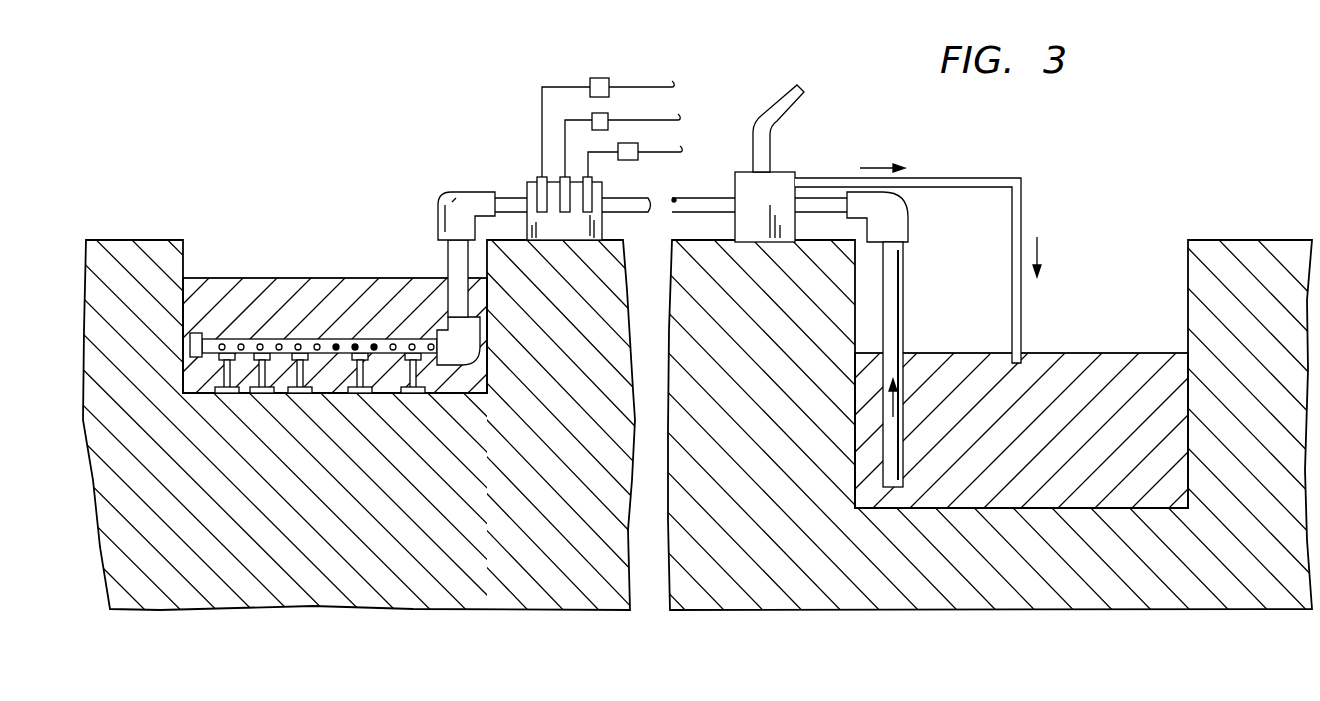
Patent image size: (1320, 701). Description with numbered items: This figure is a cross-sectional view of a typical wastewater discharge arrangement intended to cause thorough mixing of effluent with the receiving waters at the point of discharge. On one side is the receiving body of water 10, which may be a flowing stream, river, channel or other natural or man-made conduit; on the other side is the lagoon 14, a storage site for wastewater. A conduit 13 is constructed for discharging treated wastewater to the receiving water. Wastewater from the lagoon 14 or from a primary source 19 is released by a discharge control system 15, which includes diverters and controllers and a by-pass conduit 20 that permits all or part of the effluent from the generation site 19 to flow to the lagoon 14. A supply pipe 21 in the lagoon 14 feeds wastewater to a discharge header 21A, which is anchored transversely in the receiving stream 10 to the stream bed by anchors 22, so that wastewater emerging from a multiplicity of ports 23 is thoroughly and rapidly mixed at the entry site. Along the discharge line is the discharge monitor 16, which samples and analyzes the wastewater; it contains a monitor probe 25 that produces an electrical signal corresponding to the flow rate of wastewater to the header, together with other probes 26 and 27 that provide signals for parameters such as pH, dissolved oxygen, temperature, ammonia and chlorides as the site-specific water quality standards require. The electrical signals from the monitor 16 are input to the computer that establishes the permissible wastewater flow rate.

The receiving body of water 10 is at (229, 275).
The conduit 13 is at (452, 188).
The lagoon 14 is at (1127, 351).
The discharge control system 15 is at (776, 172).
The discharge monitor system 16 is at (527, 183).
The primary source 19 is at (778, 118).
The by-pass conduit 20 is at (960, 178).
The supply pipe 21 is at (903, 293).
The discharge header 21A is at (335, 332).
The anchors 22 is at (303, 368).
The ports 23 is at (372, 340).
The monitor probe 25 is at (598, 78).
The probe 26 is at (608, 113).
The probe 27 is at (627, 161).